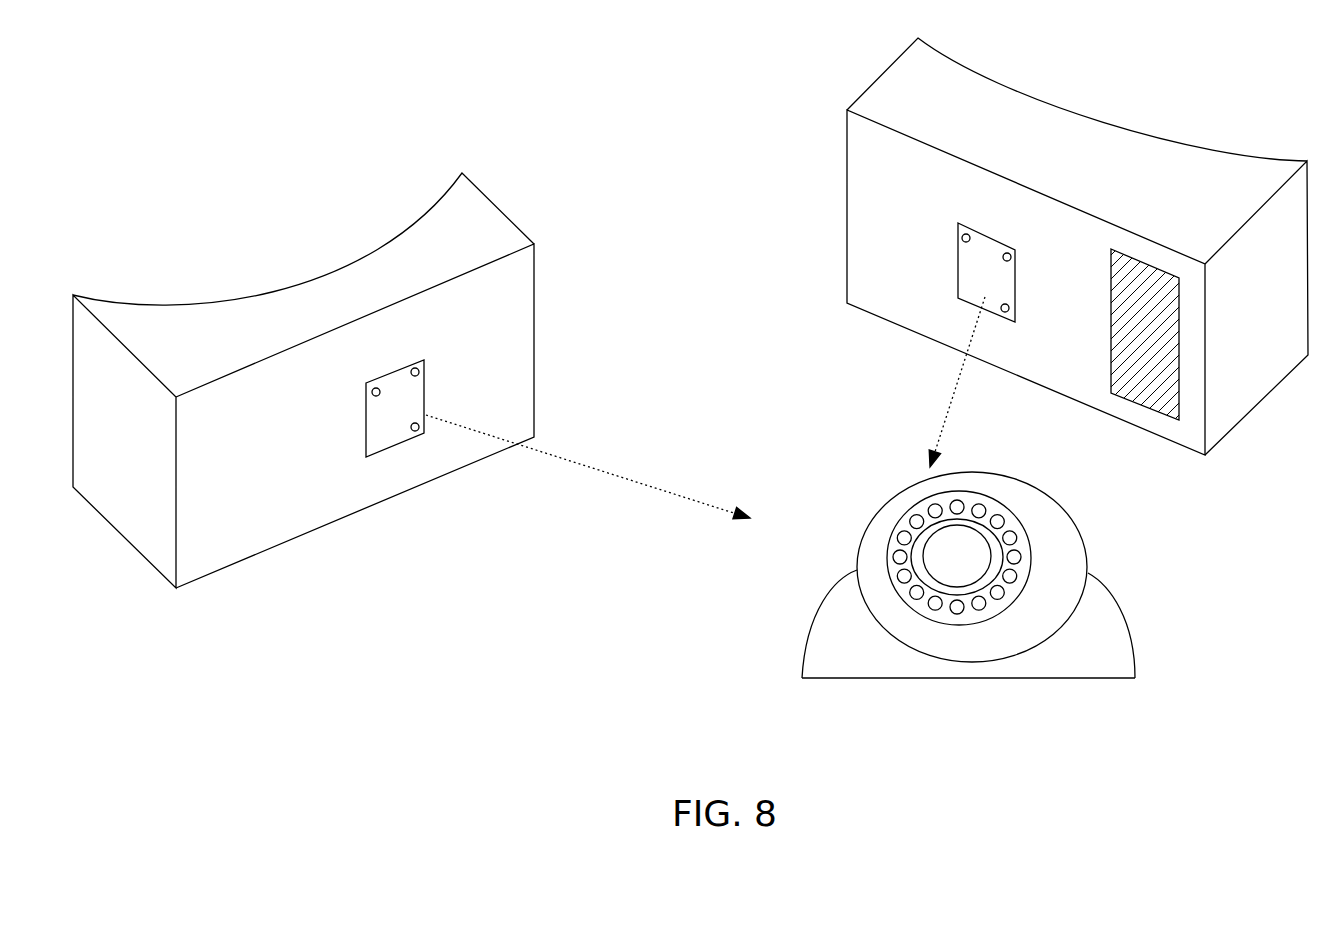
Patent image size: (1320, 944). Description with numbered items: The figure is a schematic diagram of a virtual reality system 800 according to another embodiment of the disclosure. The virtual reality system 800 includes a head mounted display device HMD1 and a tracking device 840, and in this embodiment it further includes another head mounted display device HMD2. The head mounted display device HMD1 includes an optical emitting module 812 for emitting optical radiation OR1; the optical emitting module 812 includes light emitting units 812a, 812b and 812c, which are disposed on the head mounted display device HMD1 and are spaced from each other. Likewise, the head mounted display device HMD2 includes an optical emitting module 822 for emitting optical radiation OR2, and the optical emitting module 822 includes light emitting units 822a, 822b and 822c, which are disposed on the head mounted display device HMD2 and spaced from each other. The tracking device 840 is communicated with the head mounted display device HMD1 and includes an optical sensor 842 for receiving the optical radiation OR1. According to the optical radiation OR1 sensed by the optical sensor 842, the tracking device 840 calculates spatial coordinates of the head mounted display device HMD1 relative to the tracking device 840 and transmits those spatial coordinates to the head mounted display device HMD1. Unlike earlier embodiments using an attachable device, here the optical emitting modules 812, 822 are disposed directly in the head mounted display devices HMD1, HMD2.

The virtual reality system 800 is at (254, 86).
The head mounted display device HMD1 is at (322, 355).
The head mounted display device HMD2 is at (1083, 246).
The optical emitting module 812 is at (402, 416).
The light emitting unit 812a is at (371, 396).
The light emitting unit 812b is at (427, 364).
The light emitting unit 812c is at (412, 452).
The optical emitting module 822 is at (981, 275).
The light emitting unit 822a is at (958, 228).
The light emitting unit 822b is at (1017, 263).
The light emitting unit 822c is at (1017, 318).
The optical radiation OR1 is at (613, 475).
The optical radiation OR2 is at (953, 398).
The tracking device 840 is at (1005, 556).
The optical sensor 842 is at (968, 527).